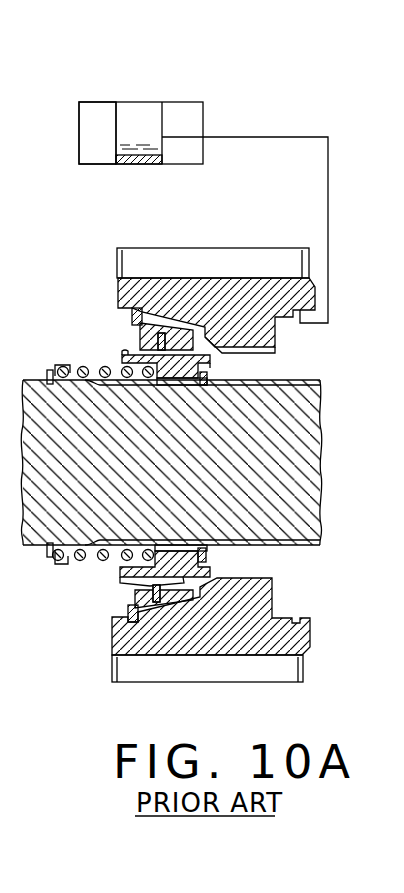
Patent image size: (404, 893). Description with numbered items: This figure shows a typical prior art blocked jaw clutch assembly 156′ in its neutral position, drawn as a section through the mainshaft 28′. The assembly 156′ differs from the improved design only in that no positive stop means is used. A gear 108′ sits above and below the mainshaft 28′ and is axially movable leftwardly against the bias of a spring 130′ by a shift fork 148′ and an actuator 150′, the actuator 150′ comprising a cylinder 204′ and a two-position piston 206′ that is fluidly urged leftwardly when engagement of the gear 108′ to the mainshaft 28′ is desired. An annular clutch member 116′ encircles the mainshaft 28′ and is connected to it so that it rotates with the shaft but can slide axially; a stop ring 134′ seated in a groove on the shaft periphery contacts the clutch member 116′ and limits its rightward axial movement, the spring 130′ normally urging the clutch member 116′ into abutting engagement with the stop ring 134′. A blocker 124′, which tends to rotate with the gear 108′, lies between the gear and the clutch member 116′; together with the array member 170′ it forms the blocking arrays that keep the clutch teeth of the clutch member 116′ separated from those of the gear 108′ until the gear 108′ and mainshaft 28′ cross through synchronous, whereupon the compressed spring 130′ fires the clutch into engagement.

The mainshaft 28′ is at (295, 480).
The gear 108′ is at (186, 262).
The clutch member 116′ is at (210, 572).
The blocker 124′ is at (134, 330).
The spring 130′ is at (108, 565).
The stop ring 134′ is at (210, 363).
The shift fork 148′ is at (328, 215).
The actuator 150′ is at (201, 86).
The prior art blocked clutch assembly 156′ is at (337, 370).
The array member 170′ is at (122, 352).
The cylinder 204′ is at (107, 102).
The piston 206′ is at (135, 156).